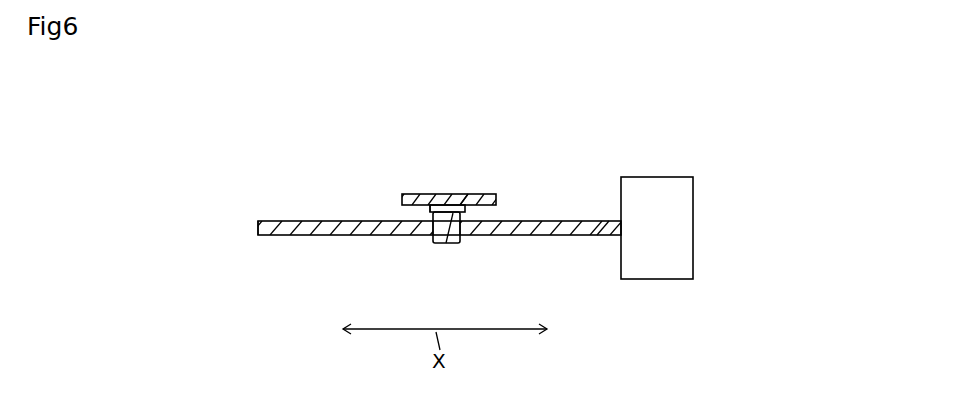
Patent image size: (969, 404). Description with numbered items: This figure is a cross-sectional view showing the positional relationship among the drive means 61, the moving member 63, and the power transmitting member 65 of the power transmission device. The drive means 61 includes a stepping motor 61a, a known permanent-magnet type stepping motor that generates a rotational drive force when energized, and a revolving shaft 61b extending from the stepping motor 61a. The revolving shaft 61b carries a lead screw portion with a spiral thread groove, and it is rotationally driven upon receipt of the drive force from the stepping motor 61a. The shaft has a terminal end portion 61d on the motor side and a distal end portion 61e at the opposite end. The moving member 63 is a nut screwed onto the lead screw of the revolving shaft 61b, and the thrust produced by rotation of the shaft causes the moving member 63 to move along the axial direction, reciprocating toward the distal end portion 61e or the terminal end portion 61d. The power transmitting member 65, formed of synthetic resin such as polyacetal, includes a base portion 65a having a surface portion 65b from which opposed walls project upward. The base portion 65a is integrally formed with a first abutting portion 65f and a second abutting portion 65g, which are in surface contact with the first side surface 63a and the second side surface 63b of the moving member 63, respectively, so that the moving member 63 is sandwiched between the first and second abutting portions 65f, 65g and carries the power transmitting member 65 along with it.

The drive means 61 is at (499, 197).
The stepping motor 61a is at (676, 227).
The revolving shaft 61b is at (315, 226).
The terminal end portion 61d is at (605, 228).
The distal end portion 61e is at (263, 232).
The moving member 63 is at (439, 261).
The first side surface 63a is at (461, 222).
The second side surface 63b is at (433, 226).
The power transmitting member 65 is at (444, 168).
The base portion 65a is at (470, 198).
The surface portion 65b is at (437, 194).
The first abutting portion 65f is at (466, 212).
The second abutting portion 65g is at (430, 212).